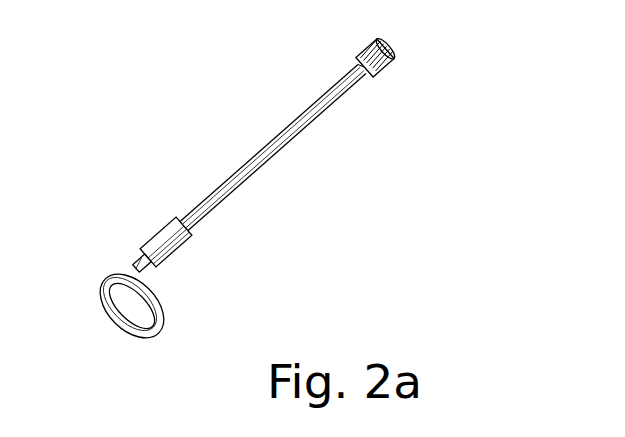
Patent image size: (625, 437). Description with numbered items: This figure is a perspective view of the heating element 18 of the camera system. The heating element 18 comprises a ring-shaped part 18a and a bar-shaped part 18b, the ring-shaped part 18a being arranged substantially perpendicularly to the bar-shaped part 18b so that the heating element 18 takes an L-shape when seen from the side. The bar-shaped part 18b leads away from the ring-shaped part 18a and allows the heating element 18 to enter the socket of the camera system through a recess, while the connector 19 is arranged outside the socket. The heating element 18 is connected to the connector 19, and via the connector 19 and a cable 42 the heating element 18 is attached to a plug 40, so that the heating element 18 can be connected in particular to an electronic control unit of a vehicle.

The heating element 18 is at (88, 309).
The ring-shaped part 18a is at (108, 266).
The bar-shaped part 18b is at (132, 274).
The connector 19 is at (163, 237).
The plug 40 is at (397, 60).
The cable 42 is at (322, 116).